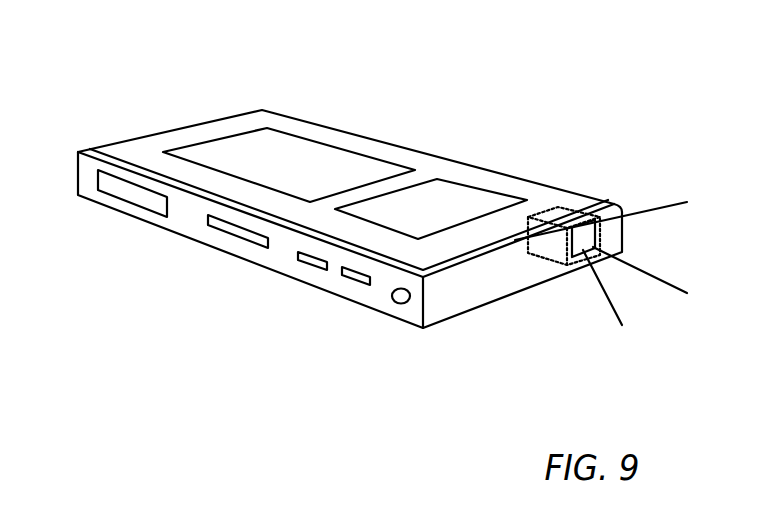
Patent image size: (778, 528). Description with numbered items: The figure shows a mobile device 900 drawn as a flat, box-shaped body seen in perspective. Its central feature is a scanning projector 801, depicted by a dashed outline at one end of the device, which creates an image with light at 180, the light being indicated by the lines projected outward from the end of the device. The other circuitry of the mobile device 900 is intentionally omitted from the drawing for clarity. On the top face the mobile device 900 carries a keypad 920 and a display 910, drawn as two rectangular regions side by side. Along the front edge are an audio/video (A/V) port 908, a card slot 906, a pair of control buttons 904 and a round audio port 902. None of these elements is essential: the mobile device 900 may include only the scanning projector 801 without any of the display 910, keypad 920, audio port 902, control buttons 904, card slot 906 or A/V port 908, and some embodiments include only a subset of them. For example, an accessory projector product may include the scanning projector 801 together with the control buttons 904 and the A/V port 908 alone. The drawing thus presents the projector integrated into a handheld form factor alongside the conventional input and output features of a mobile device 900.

The mobile device 900 is at (652, 60).
The keypad 920 is at (302, 150).
The display 910 is at (442, 187).
The audio/video (A/V) port 908 is at (117, 190).
The card slot 906 is at (230, 232).
The control buttons 904 is at (349, 279).
The audio port 902 is at (397, 304).
The scanning projector 801 is at (562, 210).
The light 180 is at (590, 232).